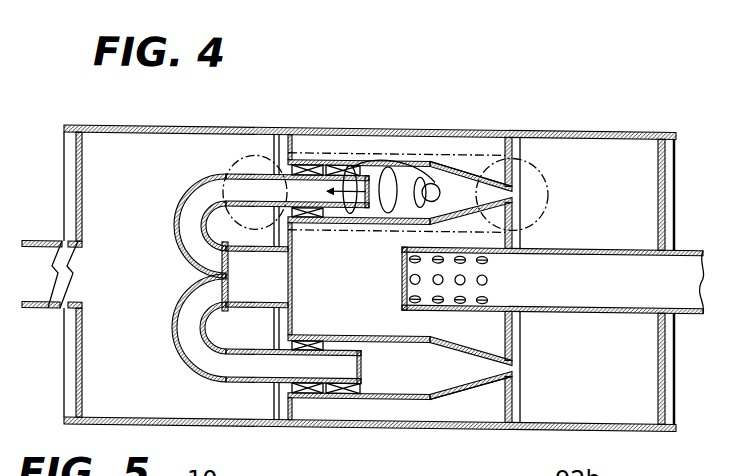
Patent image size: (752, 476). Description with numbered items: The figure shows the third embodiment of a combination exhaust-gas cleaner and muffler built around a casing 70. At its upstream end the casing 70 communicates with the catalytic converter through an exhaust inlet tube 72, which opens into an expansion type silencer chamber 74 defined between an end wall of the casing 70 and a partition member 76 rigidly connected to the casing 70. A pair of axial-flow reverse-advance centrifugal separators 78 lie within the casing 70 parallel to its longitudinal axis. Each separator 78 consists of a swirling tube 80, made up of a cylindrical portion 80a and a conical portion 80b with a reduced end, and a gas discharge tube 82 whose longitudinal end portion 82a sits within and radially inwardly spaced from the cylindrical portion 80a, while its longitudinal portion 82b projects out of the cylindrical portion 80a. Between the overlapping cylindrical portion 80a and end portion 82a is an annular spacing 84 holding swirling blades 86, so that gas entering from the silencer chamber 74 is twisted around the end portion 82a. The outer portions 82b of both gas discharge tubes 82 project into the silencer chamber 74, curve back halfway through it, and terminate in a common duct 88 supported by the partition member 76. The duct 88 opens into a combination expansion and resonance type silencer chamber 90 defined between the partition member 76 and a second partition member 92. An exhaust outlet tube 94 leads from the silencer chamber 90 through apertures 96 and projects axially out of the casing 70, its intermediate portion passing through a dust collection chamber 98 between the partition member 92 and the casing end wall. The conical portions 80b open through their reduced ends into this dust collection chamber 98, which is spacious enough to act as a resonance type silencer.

The casing 70 is at (173, 127).
The exhaust inlet tube 72 is at (37, 241).
The expansion type silencer chamber 74 is at (147, 234).
The partition member 76 is at (283, 137).
The axial-flow reverse-advance centrifugal separator 78 is at (391, 150).
The swirling tube 80 is at (456, 164).
The cylindrical portion 80a is at (431, 157).
The conical portion 80b is at (483, 172).
The gas discharge tube 82 is at (328, 172).
The longitudinal end portion 82a is at (352, 192).
The longitudinal portion 82b is at (245, 172).
The annular spacing 84 is at (338, 210).
The swirling blades 86 is at (323, 214).
The common duct 88 is at (247, 304).
The combination expansion and resonance type silencer chamber 90 is at (367, 305).
The second partition member 92 is at (513, 166).
The exhaust outlet tube 94 is at (597, 306).
The apertures 96 is at (440, 281).
The dust collection chamber 98 is at (612, 214).